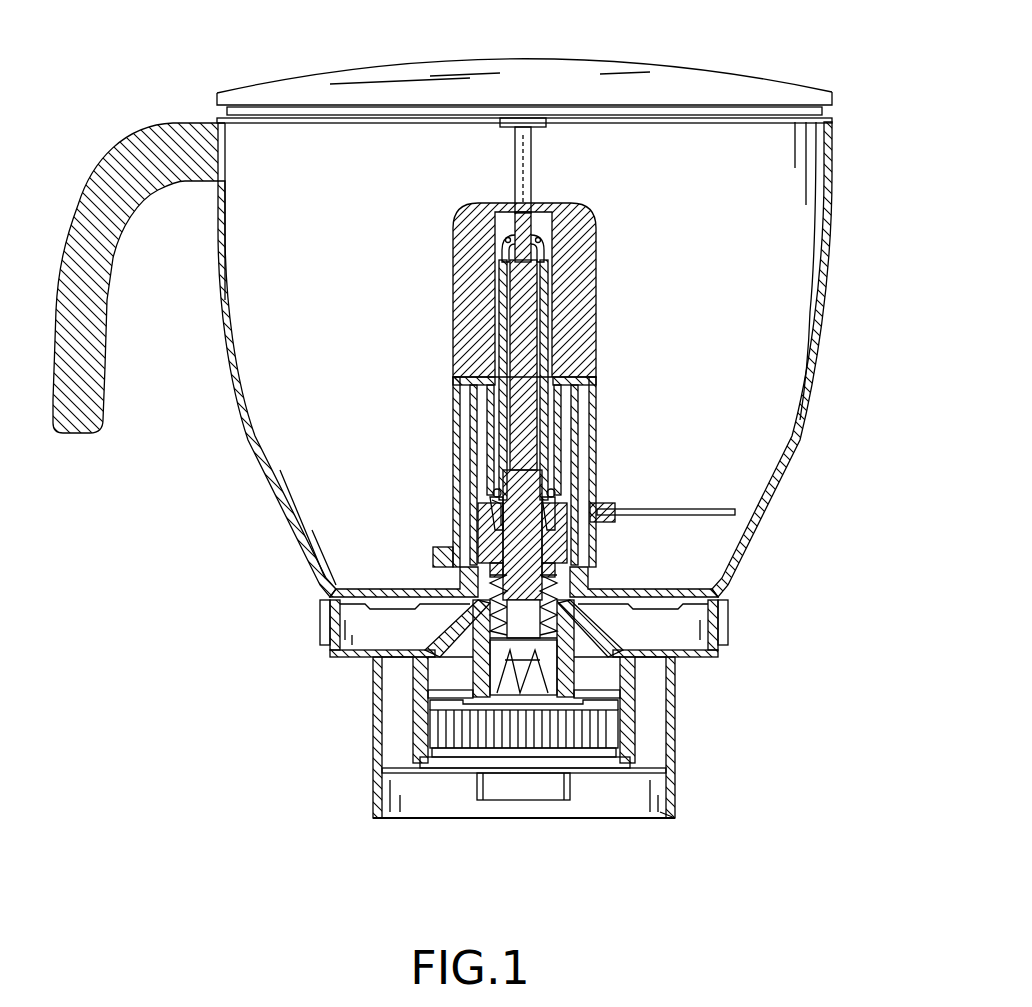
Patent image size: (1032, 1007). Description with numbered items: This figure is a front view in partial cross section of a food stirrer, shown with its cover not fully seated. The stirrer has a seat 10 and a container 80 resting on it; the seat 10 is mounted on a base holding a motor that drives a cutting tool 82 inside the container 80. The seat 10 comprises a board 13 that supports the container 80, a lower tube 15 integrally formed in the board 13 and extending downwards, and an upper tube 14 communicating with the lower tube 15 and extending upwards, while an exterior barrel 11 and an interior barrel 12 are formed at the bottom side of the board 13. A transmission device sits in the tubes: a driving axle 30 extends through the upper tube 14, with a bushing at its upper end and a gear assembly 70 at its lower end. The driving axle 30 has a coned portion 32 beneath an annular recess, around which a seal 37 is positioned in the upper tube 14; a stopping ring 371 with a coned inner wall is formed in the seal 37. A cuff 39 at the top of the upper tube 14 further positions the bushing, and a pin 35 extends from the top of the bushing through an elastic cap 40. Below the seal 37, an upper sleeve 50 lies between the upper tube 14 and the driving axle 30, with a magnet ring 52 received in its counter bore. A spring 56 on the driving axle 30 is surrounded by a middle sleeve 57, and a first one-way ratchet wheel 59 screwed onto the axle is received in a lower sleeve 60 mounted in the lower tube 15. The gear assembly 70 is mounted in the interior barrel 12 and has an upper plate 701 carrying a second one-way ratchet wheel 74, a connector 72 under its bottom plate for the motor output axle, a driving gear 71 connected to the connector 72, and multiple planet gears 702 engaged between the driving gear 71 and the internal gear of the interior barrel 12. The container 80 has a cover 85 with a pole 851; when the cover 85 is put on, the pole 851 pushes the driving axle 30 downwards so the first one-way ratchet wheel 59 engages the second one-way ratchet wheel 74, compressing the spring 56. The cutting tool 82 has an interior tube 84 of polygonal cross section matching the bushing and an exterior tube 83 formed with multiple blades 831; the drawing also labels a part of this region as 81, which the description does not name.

The seat 10 is at (704, 776).
The exterior barrel 11 is at (674, 802).
The interior barrel 12 is at (620, 708).
The board 13 is at (720, 640).
The upper tube 14 is at (445, 554).
The lower tube 15 is at (580, 652).
The driving axle 30 is at (510, 328).
The coned portion 32 is at (493, 492).
The pin 35 is at (548, 212).
The seal 37 is at (490, 512).
The cuff 39 is at (556, 492).
The elastic cap 40 is at (548, 245).
The upper sleeve 50 is at (570, 548).
The magnet ring 52 is at (558, 570).
The spring 56 is at (595, 607).
The middle sleeve 57 is at (470, 605).
The first one-way ratchet wheel 59 is at (420, 668).
The lower sleeve 60 is at (662, 690).
The gear assembly 70 is at (422, 738).
The driving gear 71 is at (521, 757).
The connector 72 is at (552, 792).
The second one-way ratchet wheel 74 is at (480, 693).
The container 80 is at (803, 462).
The outer cup wall 81 is at (580, 395).
The cutting tool 82 is at (612, 273).
The exterior tube 83 is at (594, 468).
The interior tube 84 is at (574, 445).
The cover 85 is at (620, 78).
The stopping ring 371 is at (597, 525).
The upper plate 701 is at (640, 755).
The planet gears 702 is at (442, 760).
The blades 831 is at (692, 509).
The pole 851 is at (532, 160).